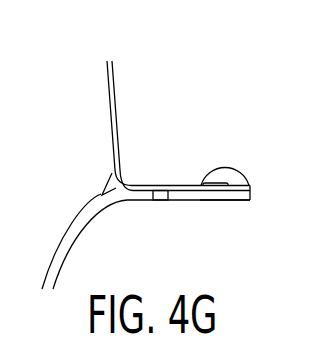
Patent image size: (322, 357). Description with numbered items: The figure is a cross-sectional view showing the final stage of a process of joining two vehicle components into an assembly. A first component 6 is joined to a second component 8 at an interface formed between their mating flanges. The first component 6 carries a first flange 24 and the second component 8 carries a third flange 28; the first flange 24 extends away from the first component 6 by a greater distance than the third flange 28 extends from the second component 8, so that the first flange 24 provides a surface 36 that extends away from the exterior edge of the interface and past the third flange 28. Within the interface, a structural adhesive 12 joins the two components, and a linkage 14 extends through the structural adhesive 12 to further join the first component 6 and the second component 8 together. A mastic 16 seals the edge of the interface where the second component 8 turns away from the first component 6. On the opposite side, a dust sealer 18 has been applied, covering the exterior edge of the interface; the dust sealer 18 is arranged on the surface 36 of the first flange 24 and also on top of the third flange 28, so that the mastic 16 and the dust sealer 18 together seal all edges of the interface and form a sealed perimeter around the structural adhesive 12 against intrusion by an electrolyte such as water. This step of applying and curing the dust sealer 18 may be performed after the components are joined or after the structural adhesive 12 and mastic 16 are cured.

The first component 6 is at (66, 230).
The second component 8 is at (117, 113).
The structural adhesive 12 is at (208, 181).
The linkage 14 is at (161, 200).
The mastic 16 is at (112, 173).
The dust sealer 18 is at (198, 178).
The first flange 24 is at (208, 200).
The third flange 28 is at (196, 185).
The surface 36 is at (240, 182).